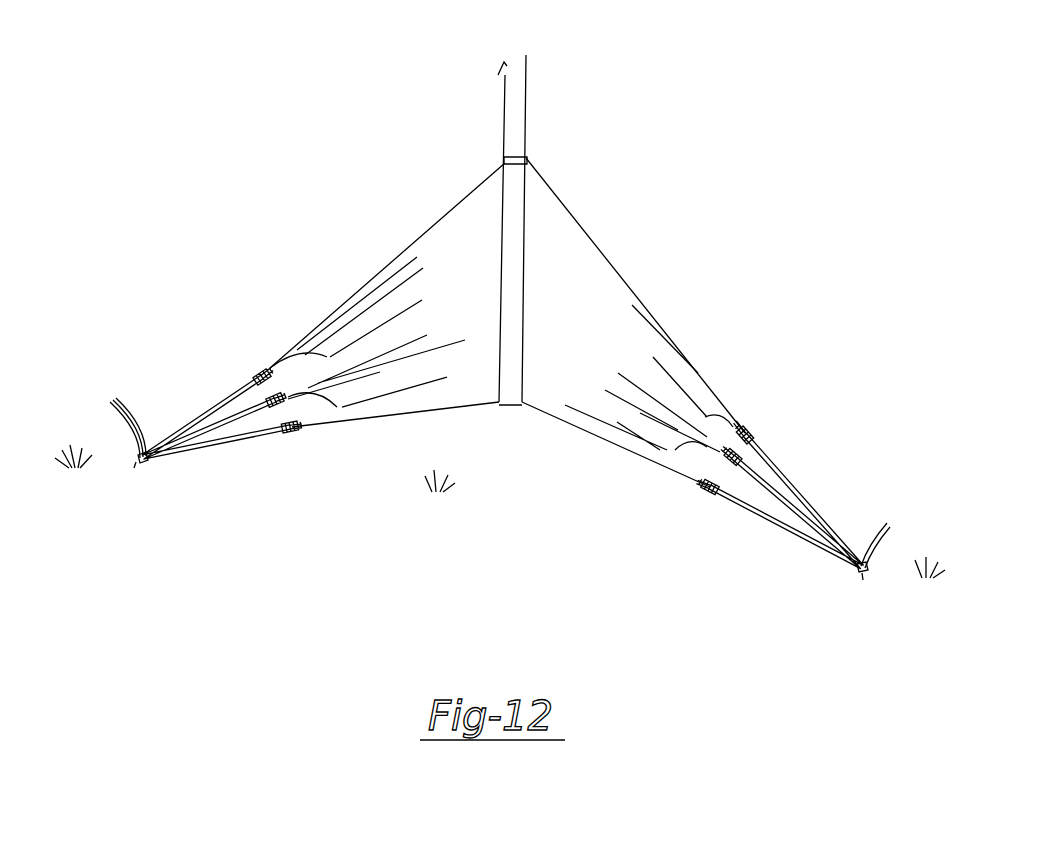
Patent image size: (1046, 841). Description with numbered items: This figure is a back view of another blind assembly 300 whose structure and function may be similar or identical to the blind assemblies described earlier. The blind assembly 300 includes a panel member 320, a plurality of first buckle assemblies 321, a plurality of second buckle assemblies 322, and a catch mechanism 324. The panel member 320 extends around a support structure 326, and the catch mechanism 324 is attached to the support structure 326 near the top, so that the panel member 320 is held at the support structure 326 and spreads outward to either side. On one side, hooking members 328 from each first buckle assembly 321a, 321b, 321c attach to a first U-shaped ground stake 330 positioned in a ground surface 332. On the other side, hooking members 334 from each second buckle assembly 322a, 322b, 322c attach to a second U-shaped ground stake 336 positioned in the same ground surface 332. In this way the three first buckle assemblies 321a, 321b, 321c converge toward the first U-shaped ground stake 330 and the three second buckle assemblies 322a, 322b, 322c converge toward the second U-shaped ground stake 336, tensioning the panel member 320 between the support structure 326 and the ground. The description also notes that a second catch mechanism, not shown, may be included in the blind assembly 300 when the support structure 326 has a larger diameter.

The blind assembly 300 is at (613, 134).
The panel member 320 is at (680, 276).
The plurality of first buckle assemblies 321 is at (805, 428).
The first buckle assembly 321a is at (786, 477).
The first buckle assembly 321b is at (772, 522).
The first buckle assembly 321c is at (762, 483).
The plurality of second buckle assemblies 322 is at (188, 381).
The second buckle assembly 322a is at (214, 408).
The second buckle assembly 322b is at (257, 437).
The second buckle assembly 322c is at (217, 427).
The catch mechanism 324 is at (504, 161).
The support structure 326 is at (513, 113).
The hooking members 328 is at (895, 542).
The first U-shaped ground stake 330 is at (870, 572).
The ground surface 332 is at (700, 596).
The hooking members 334 is at (108, 427).
The second U-shaped ground stake 336 is at (134, 463).